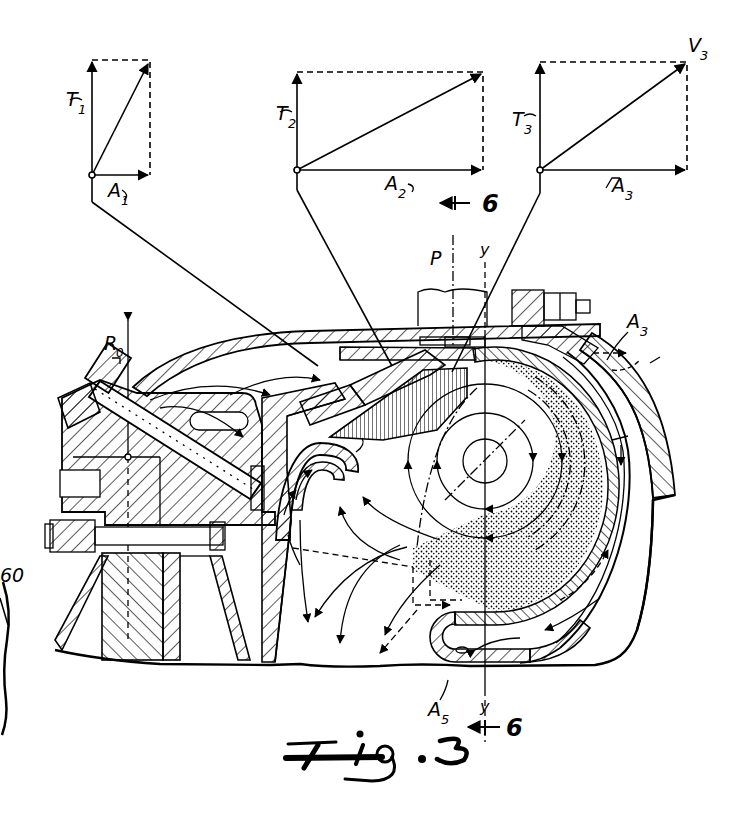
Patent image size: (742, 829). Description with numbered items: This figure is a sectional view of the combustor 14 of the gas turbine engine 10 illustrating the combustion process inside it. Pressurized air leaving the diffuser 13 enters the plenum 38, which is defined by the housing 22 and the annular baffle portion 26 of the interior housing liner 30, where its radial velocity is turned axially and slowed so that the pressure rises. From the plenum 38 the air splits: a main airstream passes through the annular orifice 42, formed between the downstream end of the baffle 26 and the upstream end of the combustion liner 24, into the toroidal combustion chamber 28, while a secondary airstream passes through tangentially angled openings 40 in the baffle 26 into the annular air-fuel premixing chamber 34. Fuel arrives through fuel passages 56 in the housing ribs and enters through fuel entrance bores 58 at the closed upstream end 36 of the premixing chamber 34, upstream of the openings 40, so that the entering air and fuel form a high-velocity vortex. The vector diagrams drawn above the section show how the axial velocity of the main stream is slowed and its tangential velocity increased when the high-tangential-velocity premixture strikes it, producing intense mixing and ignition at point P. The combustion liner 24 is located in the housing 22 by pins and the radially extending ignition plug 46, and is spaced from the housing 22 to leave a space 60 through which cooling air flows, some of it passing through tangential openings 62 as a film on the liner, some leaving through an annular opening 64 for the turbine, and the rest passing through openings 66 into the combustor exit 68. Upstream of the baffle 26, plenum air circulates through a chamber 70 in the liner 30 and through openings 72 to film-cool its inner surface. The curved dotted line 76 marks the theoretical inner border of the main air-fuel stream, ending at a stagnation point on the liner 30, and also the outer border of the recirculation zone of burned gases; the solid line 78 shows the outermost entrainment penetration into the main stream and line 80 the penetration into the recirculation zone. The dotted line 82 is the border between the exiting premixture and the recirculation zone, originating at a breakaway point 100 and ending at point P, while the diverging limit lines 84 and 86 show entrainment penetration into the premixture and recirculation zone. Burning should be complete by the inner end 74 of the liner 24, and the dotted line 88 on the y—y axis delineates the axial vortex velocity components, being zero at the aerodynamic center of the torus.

The diffuser 13 is at (130, 666).
The combustor 14 is at (668, 625).
The housing 22 is at (617, 397).
The combustion liner 24 is at (604, 408).
The annular baffle portion 26 is at (400, 432).
The combustion chamber 28 is at (640, 524).
The interior housing liner 30 is at (356, 508).
The air-fuel premixing chamber 34 is at (326, 400).
The closed upstream end 36 is at (167, 452).
The plenum 38 is at (272, 343).
The openings 40 is at (300, 392).
The annular orifice 42 is at (405, 346).
The ignition plug 46 is at (455, 290).
The fuel passages 56 is at (95, 386).
The fuel entrance bores 58 is at (322, 491).
The space 60 is at (656, 500).
The openings 62 is at (624, 506).
The annular opening 64 is at (520, 656).
The openings 66 is at (552, 640).
The combustor exit 68 is at (388, 664).
The chamber 70 is at (232, 614).
The openings 72 is at (289, 591).
The inner end 74 is at (478, 640).
The dotted line 76 is at (650, 580).
The solid line 78 is at (598, 322).
The line 80 is at (490, 448).
The dotted line 82 is at (384, 345).
The limit line 84 is at (330, 386).
The limit line 86 is at (404, 428).
The dotted line 88 is at (650, 350).
The gap 100 is at (360, 450).
The gas turbine engine 10 is at (299, 561).